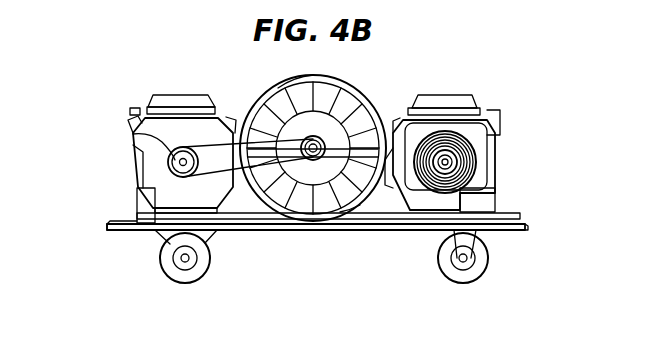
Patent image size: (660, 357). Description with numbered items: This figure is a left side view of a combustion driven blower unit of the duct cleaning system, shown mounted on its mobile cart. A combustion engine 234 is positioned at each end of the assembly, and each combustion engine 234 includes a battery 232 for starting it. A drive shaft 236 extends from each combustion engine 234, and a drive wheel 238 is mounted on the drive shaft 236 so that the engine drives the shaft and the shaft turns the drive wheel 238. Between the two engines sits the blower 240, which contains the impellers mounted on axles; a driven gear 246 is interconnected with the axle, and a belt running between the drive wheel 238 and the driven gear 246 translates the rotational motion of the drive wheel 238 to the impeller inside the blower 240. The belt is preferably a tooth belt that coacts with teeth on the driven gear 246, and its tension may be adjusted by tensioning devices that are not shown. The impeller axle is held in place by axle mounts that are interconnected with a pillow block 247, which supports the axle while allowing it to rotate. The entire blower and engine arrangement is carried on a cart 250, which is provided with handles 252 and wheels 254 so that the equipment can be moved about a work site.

The battery 232 is at (137, 212).
The combustion engine 234 is at (138, 178).
The drive shaft 236 is at (133, 134).
The drive wheel 238 is at (172, 147).
The blower 240 is at (369, 94).
The driven gear 246 is at (277, 88).
The pillow block 247 is at (352, 212).
The cart 250 is at (254, 230).
The handle 252 is at (107, 230).
The wheel 254 is at (162, 272).